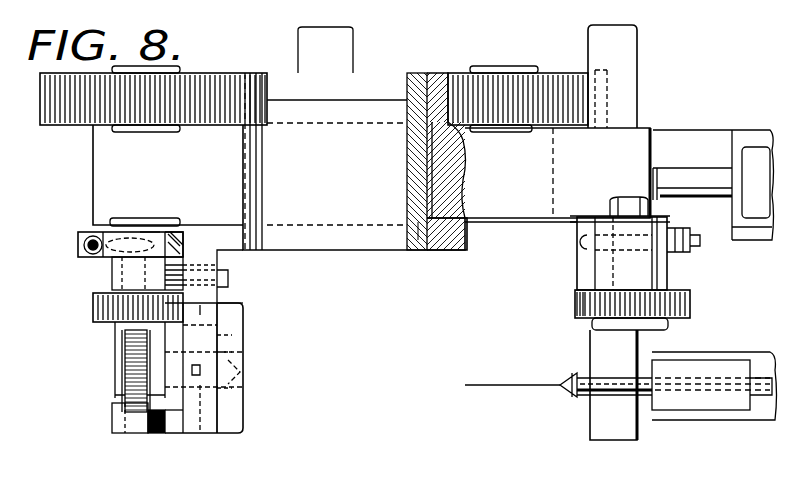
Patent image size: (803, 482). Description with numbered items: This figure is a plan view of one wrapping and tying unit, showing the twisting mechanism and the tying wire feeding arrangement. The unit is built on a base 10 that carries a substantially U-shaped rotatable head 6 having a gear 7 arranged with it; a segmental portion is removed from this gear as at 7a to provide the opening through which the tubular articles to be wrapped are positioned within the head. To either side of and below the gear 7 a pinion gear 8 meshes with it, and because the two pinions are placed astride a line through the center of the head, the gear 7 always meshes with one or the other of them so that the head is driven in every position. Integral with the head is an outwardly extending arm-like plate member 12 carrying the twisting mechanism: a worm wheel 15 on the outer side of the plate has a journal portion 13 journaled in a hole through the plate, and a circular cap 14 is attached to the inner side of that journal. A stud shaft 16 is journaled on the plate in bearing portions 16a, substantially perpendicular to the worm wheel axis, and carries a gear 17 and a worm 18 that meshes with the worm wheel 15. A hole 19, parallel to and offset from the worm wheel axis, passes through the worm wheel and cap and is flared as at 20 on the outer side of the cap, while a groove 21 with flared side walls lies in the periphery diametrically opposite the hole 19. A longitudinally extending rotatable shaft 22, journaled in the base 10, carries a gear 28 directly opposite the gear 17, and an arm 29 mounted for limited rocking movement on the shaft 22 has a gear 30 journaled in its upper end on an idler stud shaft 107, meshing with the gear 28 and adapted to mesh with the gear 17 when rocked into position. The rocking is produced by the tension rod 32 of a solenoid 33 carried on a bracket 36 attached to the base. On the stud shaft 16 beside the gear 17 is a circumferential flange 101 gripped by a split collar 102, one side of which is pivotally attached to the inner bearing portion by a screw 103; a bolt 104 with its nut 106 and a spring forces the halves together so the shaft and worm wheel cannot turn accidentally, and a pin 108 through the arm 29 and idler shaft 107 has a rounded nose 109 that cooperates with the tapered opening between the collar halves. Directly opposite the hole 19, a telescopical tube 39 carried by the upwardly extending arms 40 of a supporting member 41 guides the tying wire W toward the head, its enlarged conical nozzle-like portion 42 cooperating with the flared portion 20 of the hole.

The rotatable head 6 is at (418, 240).
The gear 7 is at (440, 73).
The segmental portion removed 7a is at (405, 73).
The pinion gear 8 is at (62, 103).
The base 10 is at (93, 157).
The plate member 12 is at (205, 433).
The journal portion 13 is at (232, 338).
The cap 14 is at (232, 316).
The worm wheel 15 is at (125, 352).
The stud shaft 16 is at (130, 440).
The bearing portions 16a is at (115, 282).
The gear 17 is at (93, 305).
The worm 18 is at (118, 372).
The hole 19 is at (183, 425).
The flared portion 20 is at (232, 390).
The groove 21 is at (232, 352).
The rotatable shaft 22 is at (625, 48).
The gear 28 is at (690, 306).
The arm 29 is at (663, 278).
The gear 30 is at (580, 306).
The tension rod 32 is at (687, 180).
The solenoid 33 is at (757, 150).
The bracket 36 is at (677, 130).
The telescopical tube 39 is at (605, 396).
The upwardly extending arms 40 is at (690, 372).
The supporting member 41 is at (762, 360).
The conical-shaped nozzle-like portion 42 is at (570, 396).
The tying wire W is at (520, 385).
The circumferential flange 101 is at (128, 245).
The split collar 102 is at (150, 240).
The screw 103 is at (183, 232).
The bolt 104 is at (88, 237).
The nut 106 is at (80, 250).
The idler stud shaft 107 is at (600, 324).
The pin 108 is at (585, 237).
The nose 109 is at (582, 248).